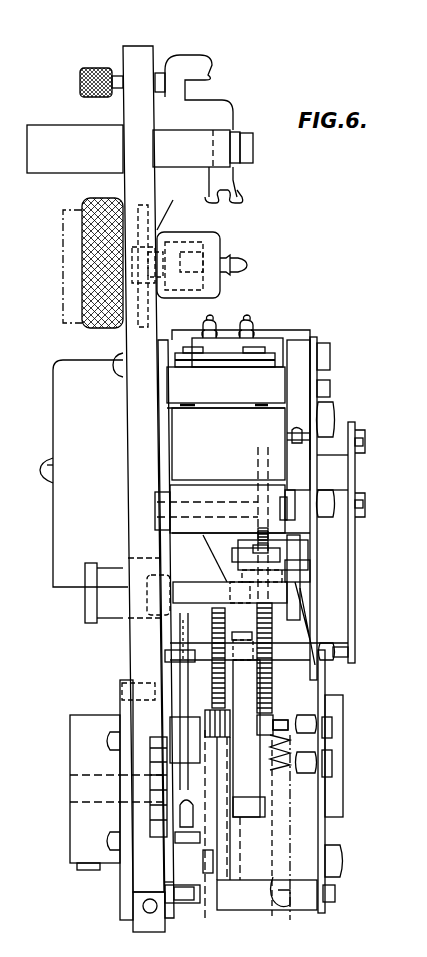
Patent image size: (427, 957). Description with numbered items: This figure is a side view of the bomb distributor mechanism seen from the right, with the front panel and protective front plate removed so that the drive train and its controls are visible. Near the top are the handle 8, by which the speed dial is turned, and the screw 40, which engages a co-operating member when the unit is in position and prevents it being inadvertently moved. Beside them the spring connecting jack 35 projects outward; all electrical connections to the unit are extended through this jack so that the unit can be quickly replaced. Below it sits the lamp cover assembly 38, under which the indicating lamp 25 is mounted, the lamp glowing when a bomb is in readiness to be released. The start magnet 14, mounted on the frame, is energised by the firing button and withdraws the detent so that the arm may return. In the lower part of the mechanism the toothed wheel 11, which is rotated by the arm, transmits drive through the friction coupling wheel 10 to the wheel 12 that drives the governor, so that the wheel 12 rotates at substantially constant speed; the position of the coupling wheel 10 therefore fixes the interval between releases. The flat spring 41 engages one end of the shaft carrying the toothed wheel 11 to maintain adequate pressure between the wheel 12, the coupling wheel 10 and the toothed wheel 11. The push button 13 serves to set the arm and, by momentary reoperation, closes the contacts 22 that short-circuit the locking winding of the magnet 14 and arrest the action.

The handle 8 is at (80, 748).
The friction coupling wheel 10 is at (272, 684).
The toothed wheel 11 is at (273, 703).
The wheel 12 is at (212, 630).
The push button 13 is at (85, 607).
The magnet 14 is at (262, 379).
The contacts 22 is at (180, 613).
The lamp 25 is at (167, 262).
The spring connecting jack 35 is at (188, 62).
The lamp cover assembly 38 is at (63, 236).
The screw 40 is at (80, 86).
The flat spring 41 is at (357, 613).